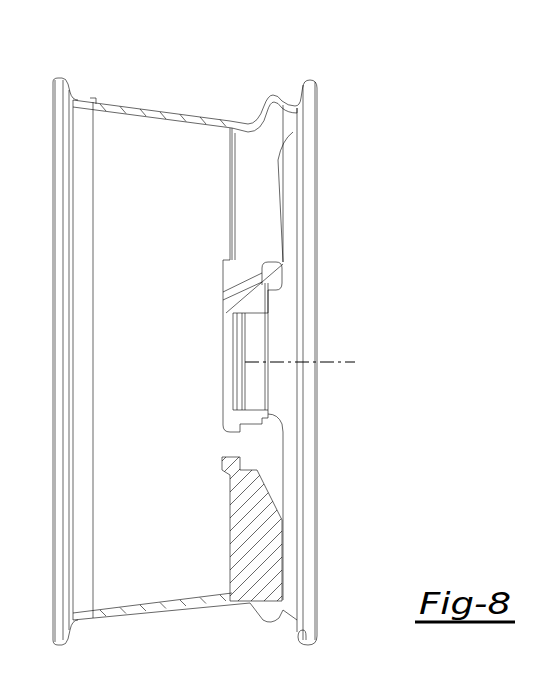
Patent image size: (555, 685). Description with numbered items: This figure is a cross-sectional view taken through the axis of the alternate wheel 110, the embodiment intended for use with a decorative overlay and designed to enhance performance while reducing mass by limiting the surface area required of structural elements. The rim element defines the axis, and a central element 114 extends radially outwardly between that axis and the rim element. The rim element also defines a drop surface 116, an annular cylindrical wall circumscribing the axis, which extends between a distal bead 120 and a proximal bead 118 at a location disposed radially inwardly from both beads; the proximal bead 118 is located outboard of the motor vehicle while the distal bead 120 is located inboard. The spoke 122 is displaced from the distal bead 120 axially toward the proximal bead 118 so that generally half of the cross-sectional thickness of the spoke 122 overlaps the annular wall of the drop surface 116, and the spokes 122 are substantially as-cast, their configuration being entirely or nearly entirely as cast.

The alternate wheel 110 is at (348, 81).
The central element 114 is at (330, 333).
The drop surface 116 is at (171, 110).
The proximal bead 118 is at (58, 76).
The distal bead 120 is at (312, 74).
The spoke 122 is at (265, 222).